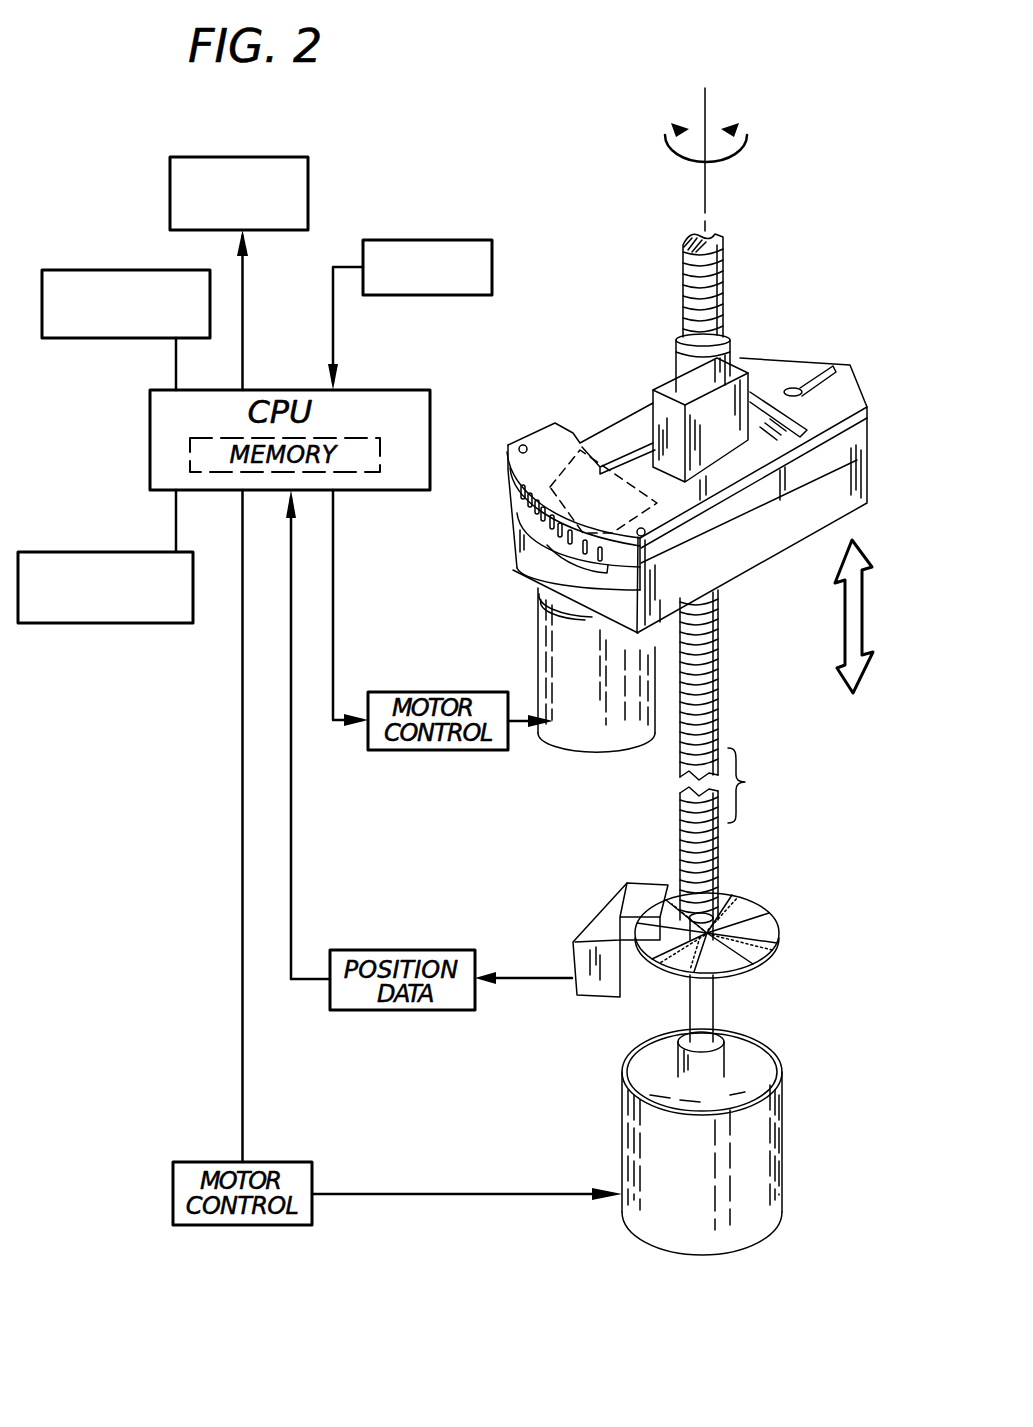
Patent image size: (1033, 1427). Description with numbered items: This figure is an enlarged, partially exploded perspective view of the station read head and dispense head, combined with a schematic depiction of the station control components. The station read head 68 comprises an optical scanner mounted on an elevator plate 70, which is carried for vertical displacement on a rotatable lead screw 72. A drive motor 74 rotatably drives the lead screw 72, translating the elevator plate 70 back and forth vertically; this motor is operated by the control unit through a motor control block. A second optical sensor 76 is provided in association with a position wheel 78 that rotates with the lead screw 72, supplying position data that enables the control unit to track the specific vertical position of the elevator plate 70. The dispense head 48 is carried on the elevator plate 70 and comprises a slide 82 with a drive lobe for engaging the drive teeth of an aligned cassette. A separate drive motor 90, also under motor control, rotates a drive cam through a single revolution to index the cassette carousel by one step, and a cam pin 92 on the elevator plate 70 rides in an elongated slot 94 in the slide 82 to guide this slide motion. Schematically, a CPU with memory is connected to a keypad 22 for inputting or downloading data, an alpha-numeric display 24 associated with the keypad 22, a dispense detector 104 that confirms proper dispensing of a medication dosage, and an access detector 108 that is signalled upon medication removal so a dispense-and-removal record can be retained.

The alpha-numeric display 24 is at (308, 182).
The keypad 22 is at (437, 240).
The access detector 108 is at (107, 338).
The dispense detector 104 is at (132, 623).
The drive motor 90 is at (562, 630).
The dispense head 48 is at (687, 418).
The elongated slot 94 is at (838, 363).
The cam pin 92 is at (792, 387).
The station read head 68 is at (548, 470).
The slide 82 is at (798, 442).
The elevator plate 70 is at (725, 562).
The lead screw 72 is at (703, 712).
The second optical sensor 76 is at (648, 898).
The position wheel 78 is at (773, 945).
The drive motor 74 is at (757, 1133).